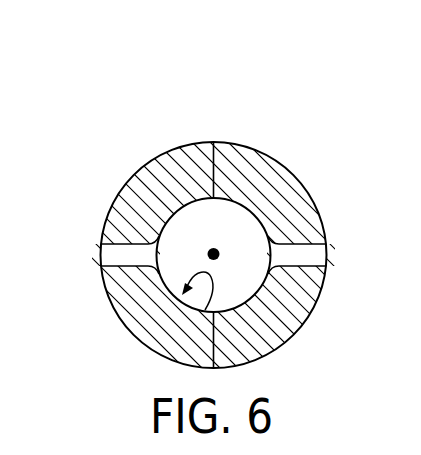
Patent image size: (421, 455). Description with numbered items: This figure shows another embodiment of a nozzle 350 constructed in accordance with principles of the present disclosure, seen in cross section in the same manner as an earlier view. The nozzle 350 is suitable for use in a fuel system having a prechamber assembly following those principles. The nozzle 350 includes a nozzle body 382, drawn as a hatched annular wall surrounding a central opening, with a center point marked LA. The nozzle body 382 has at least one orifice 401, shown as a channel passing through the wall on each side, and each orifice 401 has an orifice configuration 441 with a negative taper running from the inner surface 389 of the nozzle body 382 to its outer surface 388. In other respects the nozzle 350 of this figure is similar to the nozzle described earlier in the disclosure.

The nozzle 350 is at (123, 138).
The nozzle body 382 is at (141, 172).
The outer surface 388 is at (188, 141).
The orifice 401 is at (130, 241).
The orifice configuration 441 is at (132, 270).
The inner surface 389 is at (205, 310).
The longitudinal axis LA is at (216, 253).